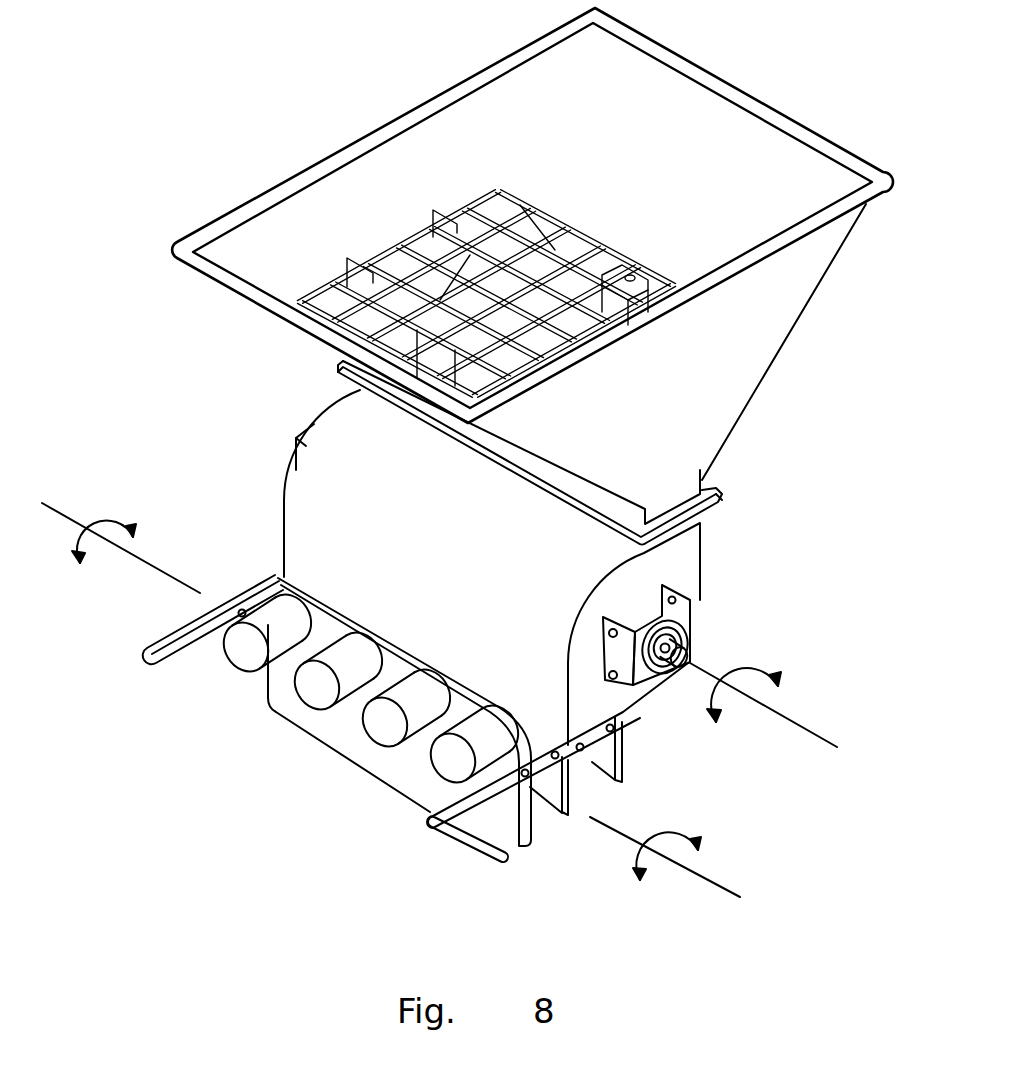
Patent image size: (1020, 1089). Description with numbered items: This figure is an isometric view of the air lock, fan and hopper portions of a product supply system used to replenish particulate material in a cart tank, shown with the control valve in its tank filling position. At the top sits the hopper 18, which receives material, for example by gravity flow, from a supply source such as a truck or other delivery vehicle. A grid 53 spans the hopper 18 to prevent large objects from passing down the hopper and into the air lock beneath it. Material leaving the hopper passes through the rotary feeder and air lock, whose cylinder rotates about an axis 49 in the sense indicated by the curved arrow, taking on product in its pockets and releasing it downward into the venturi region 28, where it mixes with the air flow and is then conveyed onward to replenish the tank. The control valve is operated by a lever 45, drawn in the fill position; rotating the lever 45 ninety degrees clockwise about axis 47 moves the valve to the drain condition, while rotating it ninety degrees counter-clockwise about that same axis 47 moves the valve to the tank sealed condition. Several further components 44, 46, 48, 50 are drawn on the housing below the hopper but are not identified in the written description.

The hopper 18 is at (462, 77).
The grid 53 is at (390, 257).
The venturi region 28 is at (285, 492).
The roller 50 is at (246, 672).
The roller 48 is at (318, 710).
The roller 46 is at (385, 747).
The roller 44 is at (453, 783).
The lever 45 is at (475, 845).
The axis 47 is at (130, 558).
The axis 49 is at (767, 690).